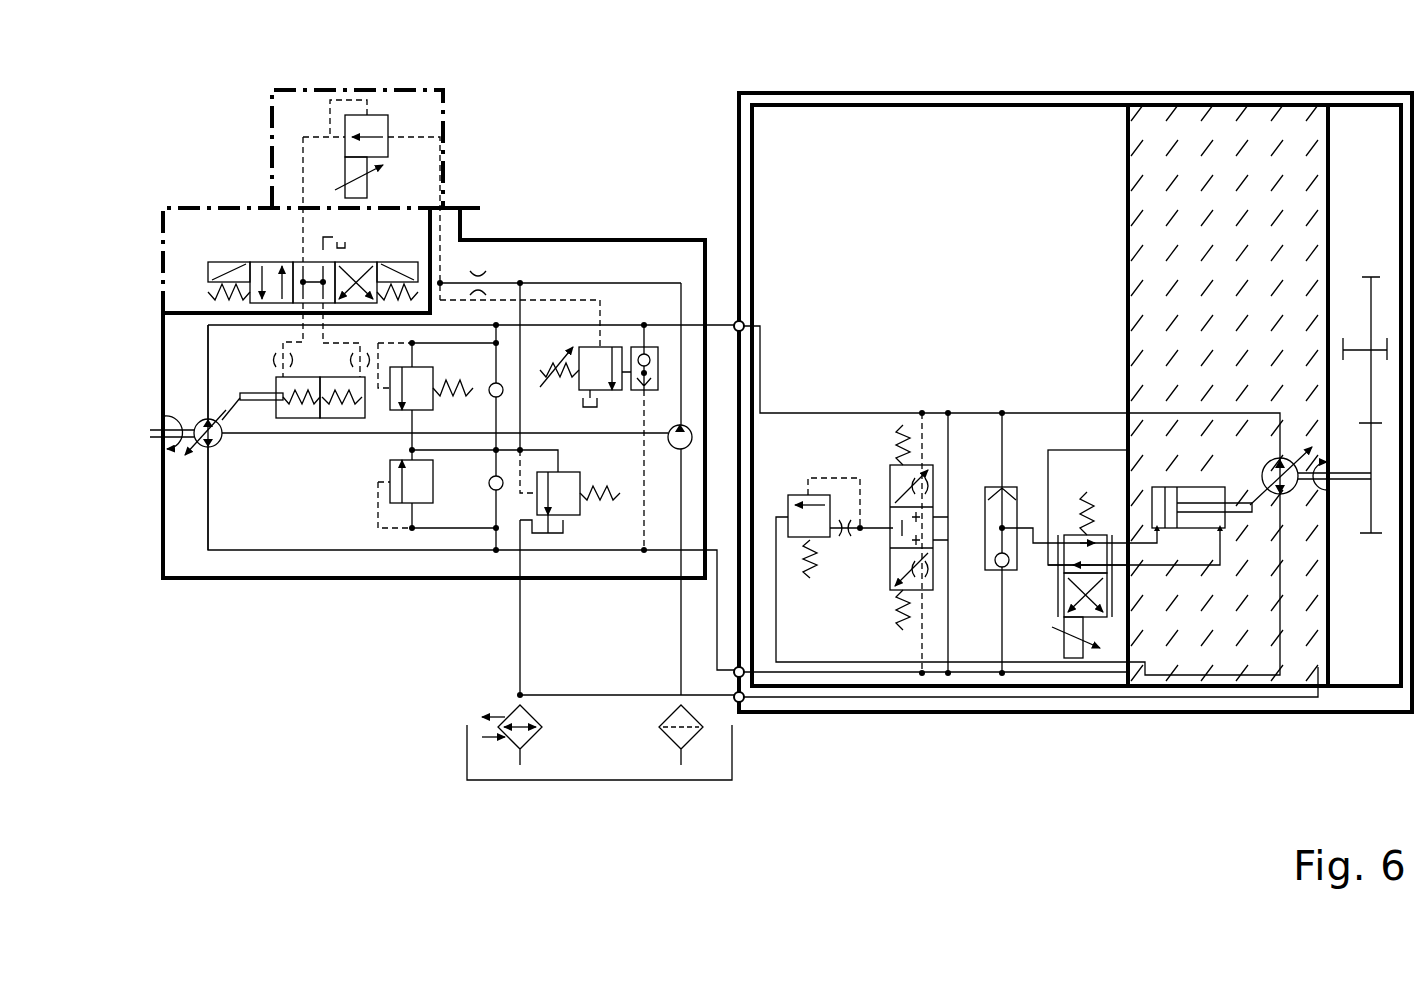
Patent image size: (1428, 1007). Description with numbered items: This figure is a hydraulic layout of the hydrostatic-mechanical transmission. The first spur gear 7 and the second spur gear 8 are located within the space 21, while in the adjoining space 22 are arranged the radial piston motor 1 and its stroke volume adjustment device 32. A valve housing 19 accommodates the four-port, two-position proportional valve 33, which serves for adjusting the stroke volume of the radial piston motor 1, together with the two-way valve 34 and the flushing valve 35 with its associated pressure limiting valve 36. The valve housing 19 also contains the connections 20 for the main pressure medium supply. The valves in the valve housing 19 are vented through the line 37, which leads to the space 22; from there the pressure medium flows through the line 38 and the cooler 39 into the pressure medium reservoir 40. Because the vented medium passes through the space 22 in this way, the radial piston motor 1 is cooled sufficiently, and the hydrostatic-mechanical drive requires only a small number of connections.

The radial piston motor 1 is at (1292, 490).
The first spur gear 7 is at (1368, 513).
The second spur gear 8 is at (1372, 317).
The valve housing 19 is at (938, 170).
The connections 20 is at (737, 697).
The space 21 is at (1352, 187).
The space 22 is at (1177, 160).
The stroke volume adjustment device 32 is at (1190, 487).
The 4/2 proportional valve 33 is at (1093, 617).
The two-way valve 34 is at (985, 500).
The flushing valve 35 is at (887, 493).
The pressure limiting valve 36 is at (800, 495).
The line 37 is at (1013, 662).
The line 38 is at (1228, 675).
The cooler 39 is at (518, 712).
The pressure medium reservoir 40 is at (570, 780).